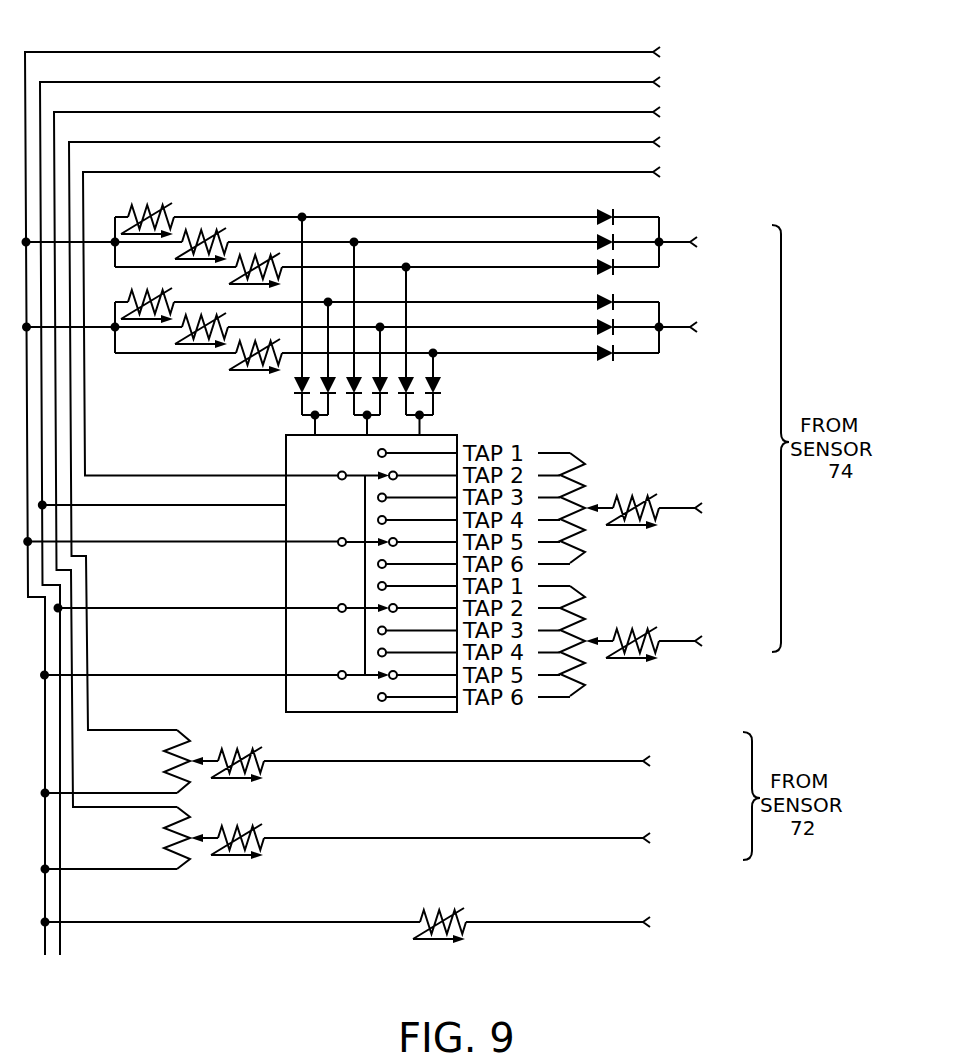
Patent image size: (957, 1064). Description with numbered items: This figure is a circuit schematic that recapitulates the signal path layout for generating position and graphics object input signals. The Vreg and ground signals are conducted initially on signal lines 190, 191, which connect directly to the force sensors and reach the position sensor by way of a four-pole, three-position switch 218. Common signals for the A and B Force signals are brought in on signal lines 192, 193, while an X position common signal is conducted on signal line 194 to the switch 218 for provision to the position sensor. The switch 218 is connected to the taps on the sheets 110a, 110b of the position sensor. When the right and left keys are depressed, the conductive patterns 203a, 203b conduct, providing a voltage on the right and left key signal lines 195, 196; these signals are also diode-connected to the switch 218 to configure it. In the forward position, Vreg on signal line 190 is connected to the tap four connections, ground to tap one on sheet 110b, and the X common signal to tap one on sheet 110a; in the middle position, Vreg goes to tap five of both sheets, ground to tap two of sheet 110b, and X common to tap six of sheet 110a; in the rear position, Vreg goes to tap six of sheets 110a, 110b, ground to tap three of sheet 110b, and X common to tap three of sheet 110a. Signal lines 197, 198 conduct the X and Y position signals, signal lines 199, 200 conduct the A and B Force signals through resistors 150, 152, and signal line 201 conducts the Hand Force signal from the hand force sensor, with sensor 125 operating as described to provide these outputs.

The signal line 190 is at (594, 52).
The signal line 191 is at (537, 82).
The signal line 192 is at (475, 112).
The signal line 193 is at (418, 142).
The signal line 194 is at (348, 172).
The signal line 195 is at (673, 240).
The signal line 196 is at (673, 325).
The signal line 197 is at (680, 506).
The signal line 198 is at (682, 639).
The signal line 199 is at (580, 760).
The signal line 200 is at (580, 837).
The signal line 201 is at (580, 922).
The conductive pattern 203a is at (170, 209).
The conductive pattern 203b is at (123, 303).
The 4-pole, 3-position switch 218 is at (286, 437).
The sheet 110a is at (617, 500).
The sheet 110b is at (617, 633).
The A force resistor 150 is at (266, 772).
The B force resistor 152 is at (266, 849).
The sensor 125 is at (419, 914).